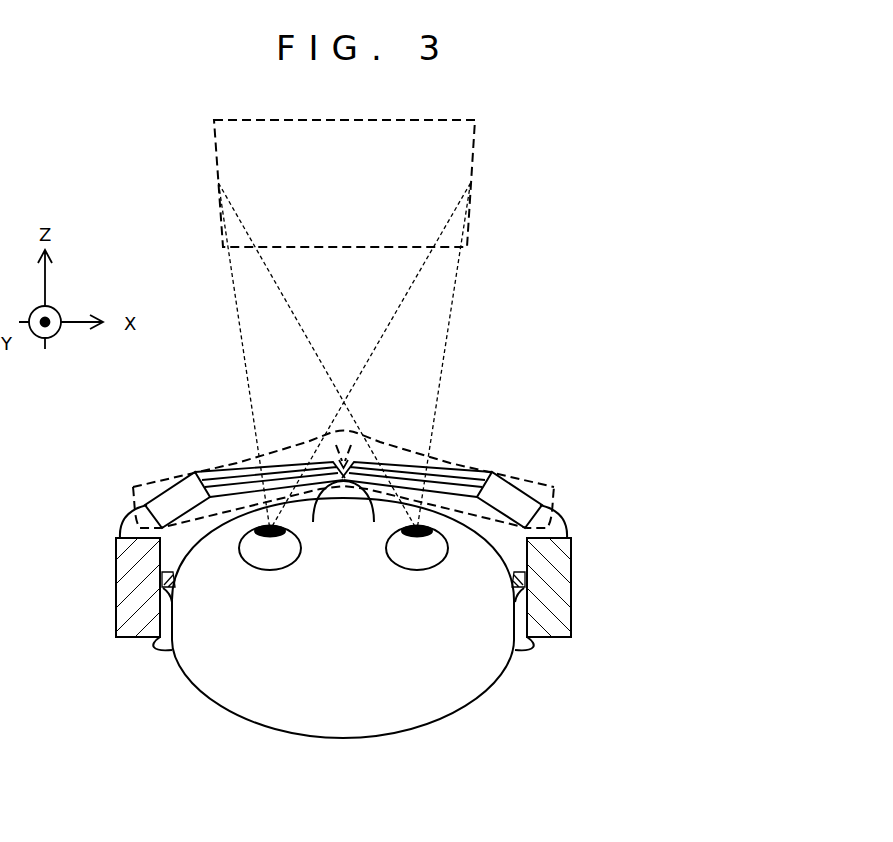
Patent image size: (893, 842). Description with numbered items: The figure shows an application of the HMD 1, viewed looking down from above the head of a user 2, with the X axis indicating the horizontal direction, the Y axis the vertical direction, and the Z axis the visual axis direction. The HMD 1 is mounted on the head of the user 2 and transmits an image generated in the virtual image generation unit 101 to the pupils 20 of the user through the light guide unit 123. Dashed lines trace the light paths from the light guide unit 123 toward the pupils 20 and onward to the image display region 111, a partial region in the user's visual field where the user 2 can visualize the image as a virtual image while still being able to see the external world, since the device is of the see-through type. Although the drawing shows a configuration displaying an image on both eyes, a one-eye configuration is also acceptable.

The HMD 1 is at (611, 395).
The user 2 is at (470, 695).
The pupils 20 is at (268, 568).
The virtual image generation unit 101 is at (170, 477).
The image display region 111 is at (475, 155).
The light guide unit 123 is at (237, 475).